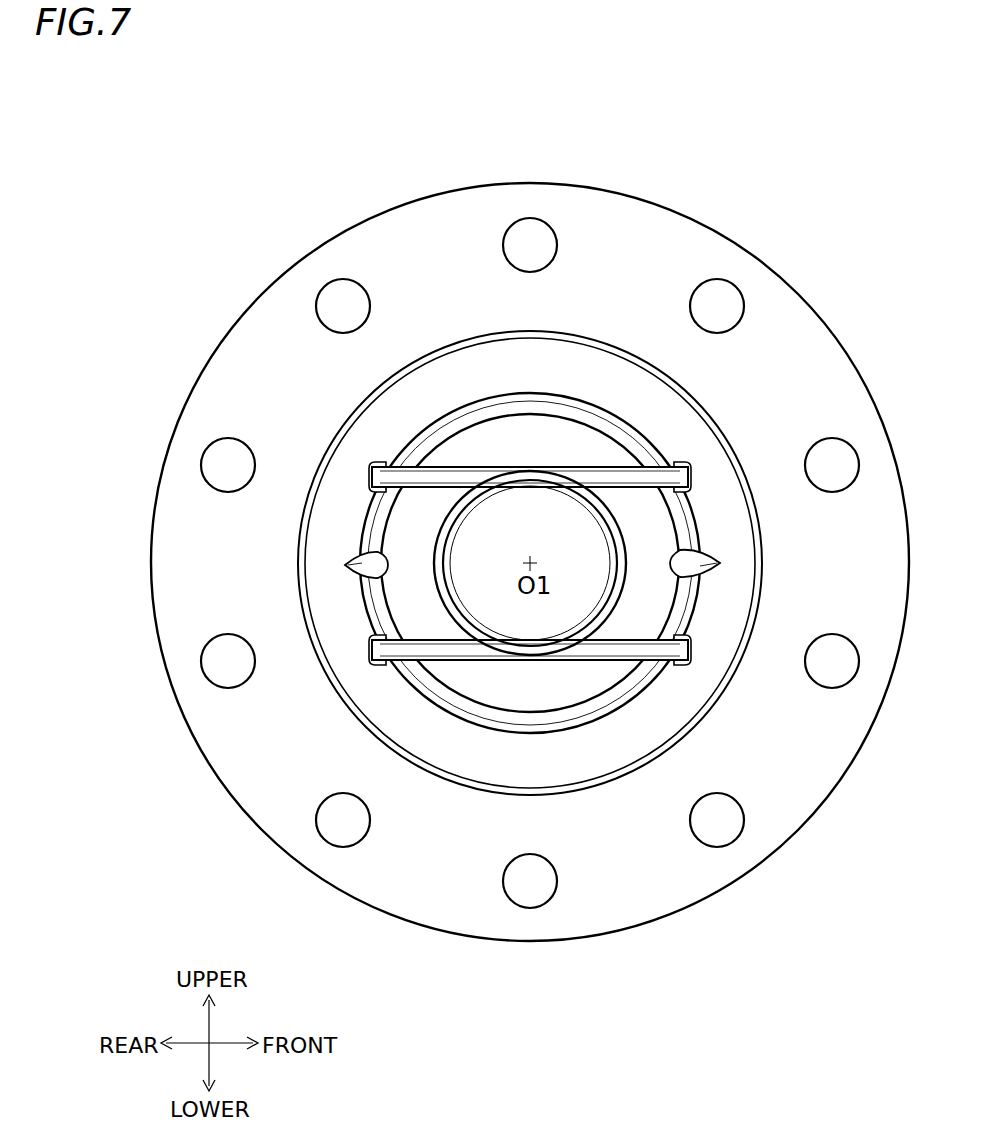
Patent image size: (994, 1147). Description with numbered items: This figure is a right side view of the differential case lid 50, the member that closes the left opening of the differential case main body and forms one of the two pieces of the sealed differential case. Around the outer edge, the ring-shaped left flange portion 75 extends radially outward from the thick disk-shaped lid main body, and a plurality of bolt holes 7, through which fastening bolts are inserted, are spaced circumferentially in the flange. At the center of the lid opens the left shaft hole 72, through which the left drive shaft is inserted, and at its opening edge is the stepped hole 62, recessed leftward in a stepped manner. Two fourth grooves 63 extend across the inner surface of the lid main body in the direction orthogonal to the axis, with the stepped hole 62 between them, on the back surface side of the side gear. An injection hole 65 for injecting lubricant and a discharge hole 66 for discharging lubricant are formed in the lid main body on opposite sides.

The differential case lid 50 is at (267, 147).
The bolt holes 7 is at (524, 245).
The left flange portion 75 is at (778, 297).
The fourth grooves 63 is at (463, 480).
The stepped hole 62 is at (577, 488).
The left shaft hole 72 is at (537, 641).
The discharge hole 66 is at (347, 566).
The injection hole 65 is at (700, 565).